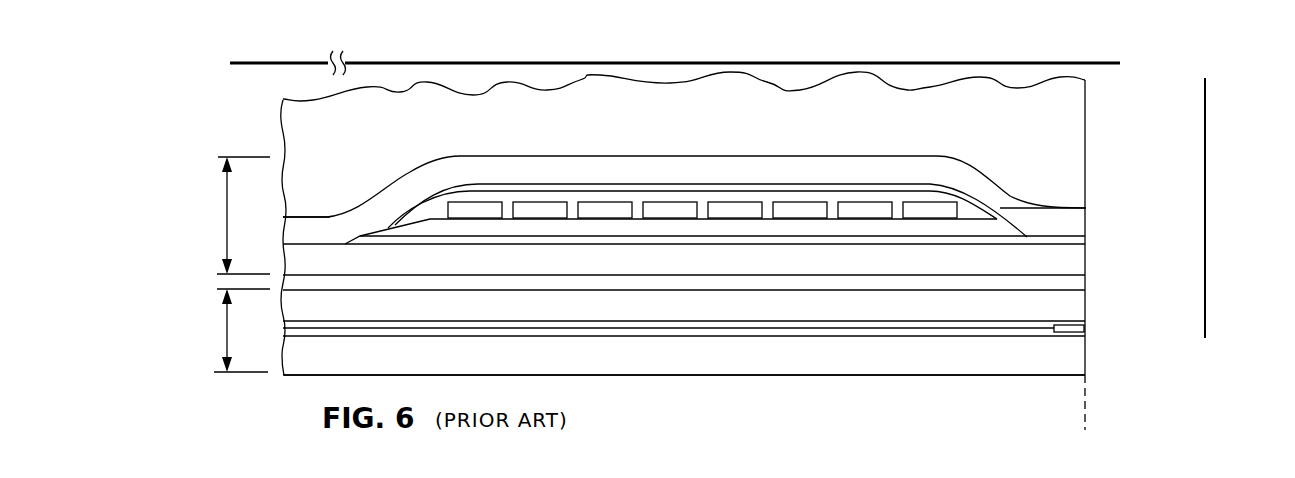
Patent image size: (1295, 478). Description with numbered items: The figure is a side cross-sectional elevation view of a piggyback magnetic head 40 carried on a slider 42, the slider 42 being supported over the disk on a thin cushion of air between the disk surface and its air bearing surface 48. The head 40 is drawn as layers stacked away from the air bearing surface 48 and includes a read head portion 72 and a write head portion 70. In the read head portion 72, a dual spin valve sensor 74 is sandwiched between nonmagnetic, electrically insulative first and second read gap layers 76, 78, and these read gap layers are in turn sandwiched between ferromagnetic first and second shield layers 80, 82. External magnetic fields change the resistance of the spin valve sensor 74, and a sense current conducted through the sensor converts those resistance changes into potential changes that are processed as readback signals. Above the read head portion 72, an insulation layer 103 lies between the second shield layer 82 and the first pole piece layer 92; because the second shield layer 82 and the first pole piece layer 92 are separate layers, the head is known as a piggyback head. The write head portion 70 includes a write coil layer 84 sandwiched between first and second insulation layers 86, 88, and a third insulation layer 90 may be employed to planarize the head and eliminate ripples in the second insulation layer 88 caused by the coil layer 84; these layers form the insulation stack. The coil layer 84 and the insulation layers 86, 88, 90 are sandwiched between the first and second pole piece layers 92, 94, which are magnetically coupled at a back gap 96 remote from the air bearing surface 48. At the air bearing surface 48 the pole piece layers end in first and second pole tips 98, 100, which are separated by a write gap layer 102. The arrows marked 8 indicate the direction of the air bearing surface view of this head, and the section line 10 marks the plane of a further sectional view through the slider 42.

The section line 8- 8 is at (1215, 333).
The section line 10- 10 is at (1113, 56).
The magnetic head 40 is at (260, 108).
The slider 42 is at (1072, 112).
The air bearing surface 48 is at (1085, 427).
The write head portion 70 is at (227, 218).
The read head portion 72 is at (227, 335).
The dual spin valve sensor 74 is at (1085, 328).
The first read gap layer 76 is at (748, 335).
The second read gap layer 78 is at (717, 318).
The first shield layer 80 is at (852, 360).
The second shield layer 82 is at (957, 308).
The write coil layer 84 is at (733, 207).
The first insulation layer 86 is at (642, 230).
The second insulation layer 88 is at (973, 210).
The third insulation layer 90 is at (512, 187).
The first pole piece layer 92 is at (1007, 263).
The second pole piece layer 94 is at (868, 167).
The back gap 96 is at (323, 240).
The first pole tip 98 is at (1085, 262).
The second pole tip 100 is at (1086, 218).
The write gap layer 102 is at (1085, 240).
The insulation layer 103 is at (912, 282).